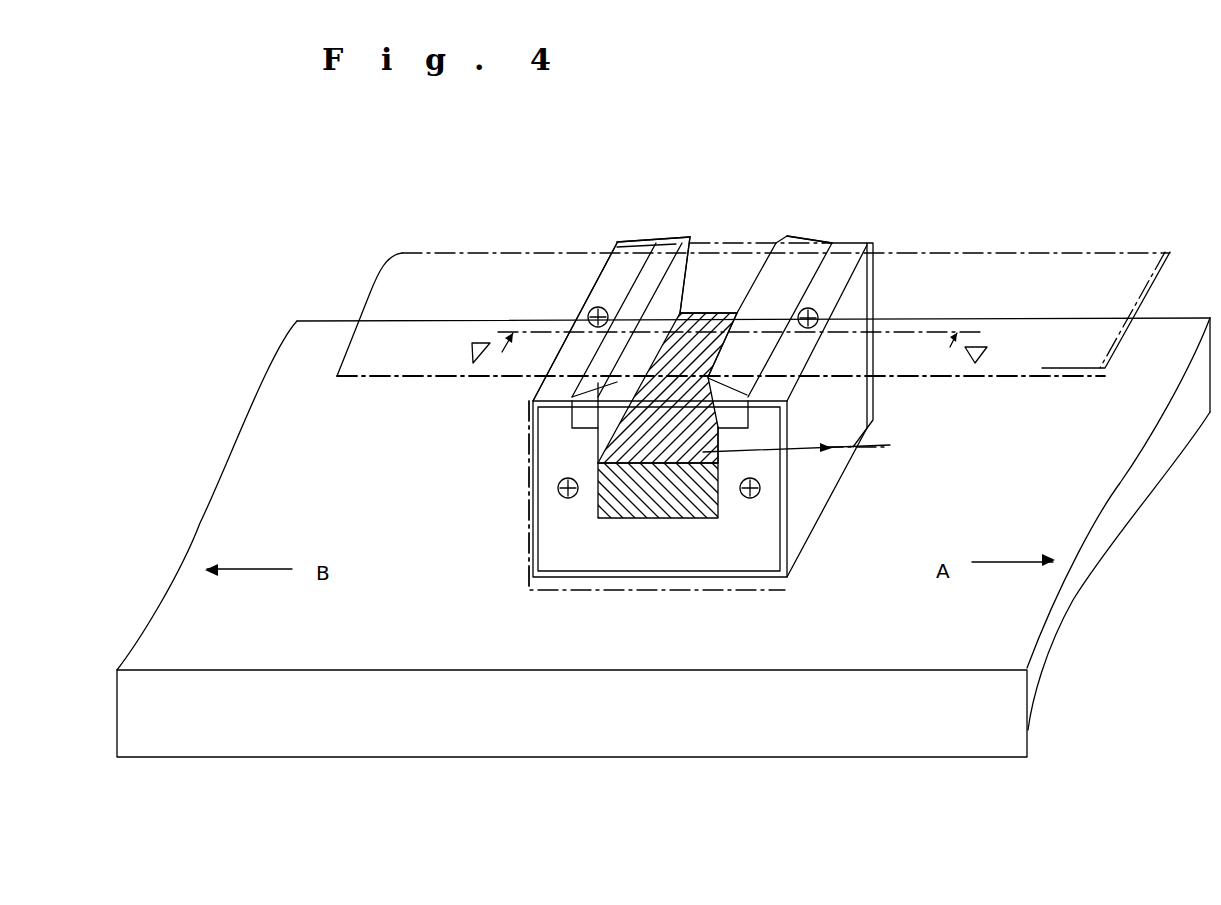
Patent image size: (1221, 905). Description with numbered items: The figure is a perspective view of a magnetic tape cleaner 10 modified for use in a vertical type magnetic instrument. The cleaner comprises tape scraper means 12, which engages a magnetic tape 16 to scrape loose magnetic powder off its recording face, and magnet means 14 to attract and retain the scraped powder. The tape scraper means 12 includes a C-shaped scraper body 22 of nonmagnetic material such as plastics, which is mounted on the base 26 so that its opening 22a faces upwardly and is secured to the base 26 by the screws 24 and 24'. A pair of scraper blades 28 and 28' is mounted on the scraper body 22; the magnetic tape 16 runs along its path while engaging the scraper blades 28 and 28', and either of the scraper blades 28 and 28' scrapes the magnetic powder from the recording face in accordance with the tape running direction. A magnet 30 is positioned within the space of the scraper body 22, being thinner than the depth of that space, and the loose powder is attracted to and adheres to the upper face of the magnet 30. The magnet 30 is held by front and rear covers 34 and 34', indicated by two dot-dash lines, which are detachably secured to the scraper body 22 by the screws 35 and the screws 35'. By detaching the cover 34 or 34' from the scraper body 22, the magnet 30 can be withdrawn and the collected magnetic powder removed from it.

The magnetic tape cleaner 10 is at (722, 212).
The tape scraper means 12 is at (847, 223).
The magnet means 14 is at (645, 508).
The magnetic tape 16 is at (450, 282).
The scraper body 22 is at (675, 552).
The opening 22a is at (733, 265).
The screw 24 is at (622, 293).
The screw 24' is at (858, 298).
The base 26 is at (280, 468).
The scraper blade 28 is at (682, 251).
The scraper blade 28' is at (815, 219).
The magnet 30 is at (600, 518).
The front cover 34 is at (471, 495).
The rear cover 34' is at (651, 199).
The screws 35 is at (495, 488).
The screws 35' is at (837, 491).